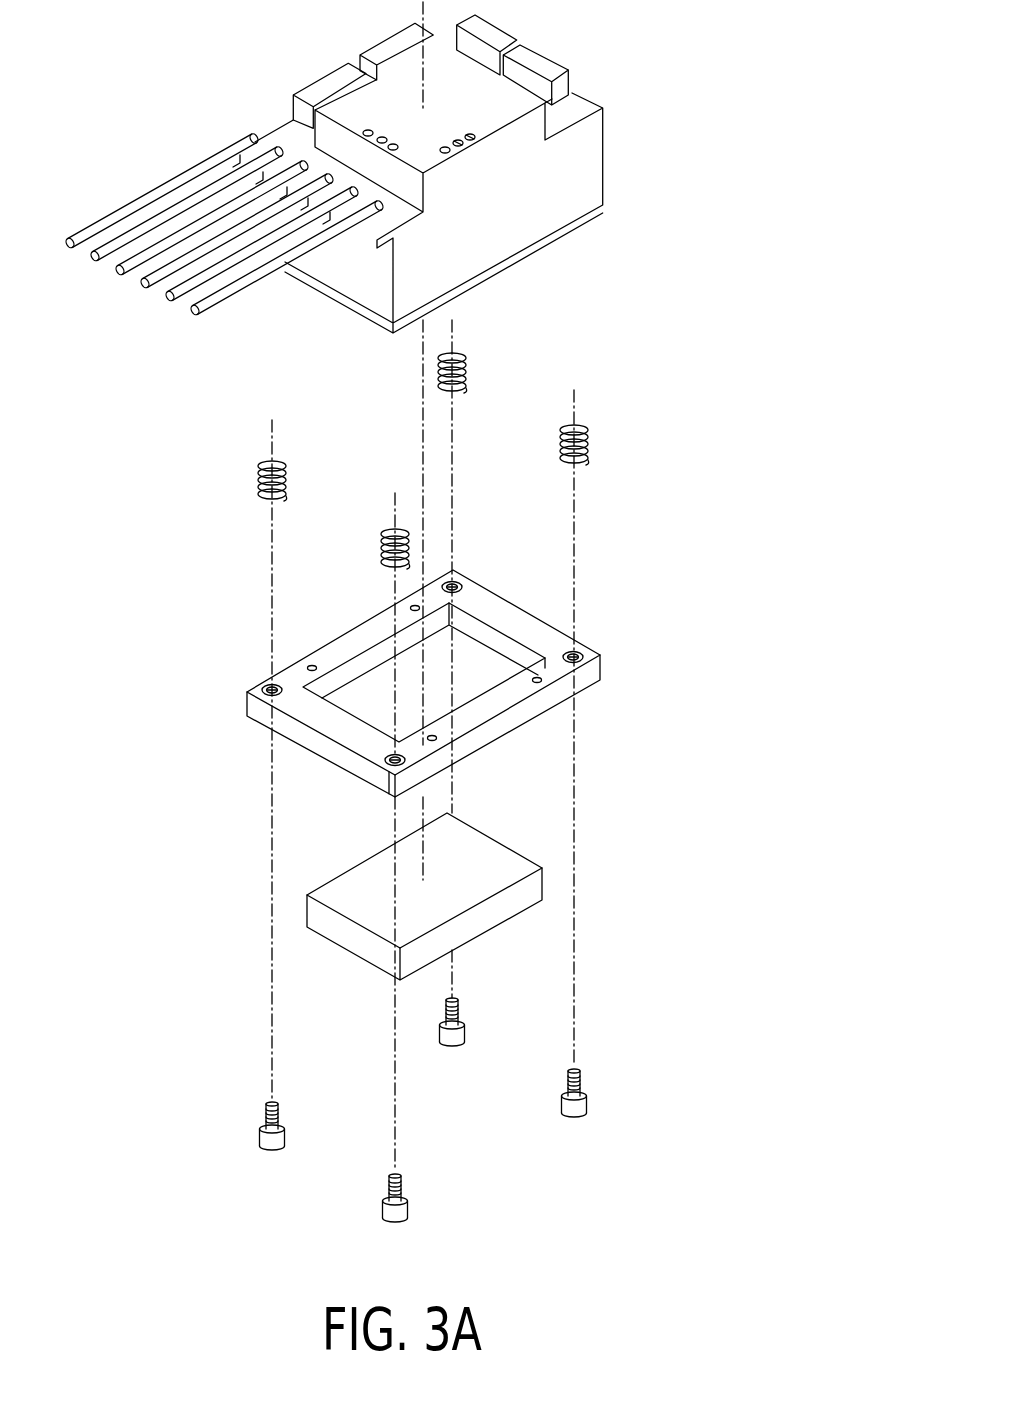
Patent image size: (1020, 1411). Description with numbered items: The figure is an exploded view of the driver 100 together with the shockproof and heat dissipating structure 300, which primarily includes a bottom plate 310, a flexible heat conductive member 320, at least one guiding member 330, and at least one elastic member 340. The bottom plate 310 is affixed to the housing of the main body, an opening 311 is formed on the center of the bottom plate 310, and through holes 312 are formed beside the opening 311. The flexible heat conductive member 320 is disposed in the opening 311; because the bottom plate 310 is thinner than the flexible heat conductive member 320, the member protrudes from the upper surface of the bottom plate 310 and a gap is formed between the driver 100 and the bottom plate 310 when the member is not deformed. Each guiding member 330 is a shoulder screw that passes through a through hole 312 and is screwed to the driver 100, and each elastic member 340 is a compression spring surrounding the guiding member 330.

The driver 100 is at (631, 175).
The shockproof and heat dissipating structure 300 is at (486, 787).
The bottom plate 310 is at (527, 715).
The opening 311 is at (367, 698).
The through hole 312 is at (462, 587).
The flexible heat conductive member 320 is at (478, 880).
The guiding member 330 is at (262, 1130).
The elastic member 340 is at (588, 447).